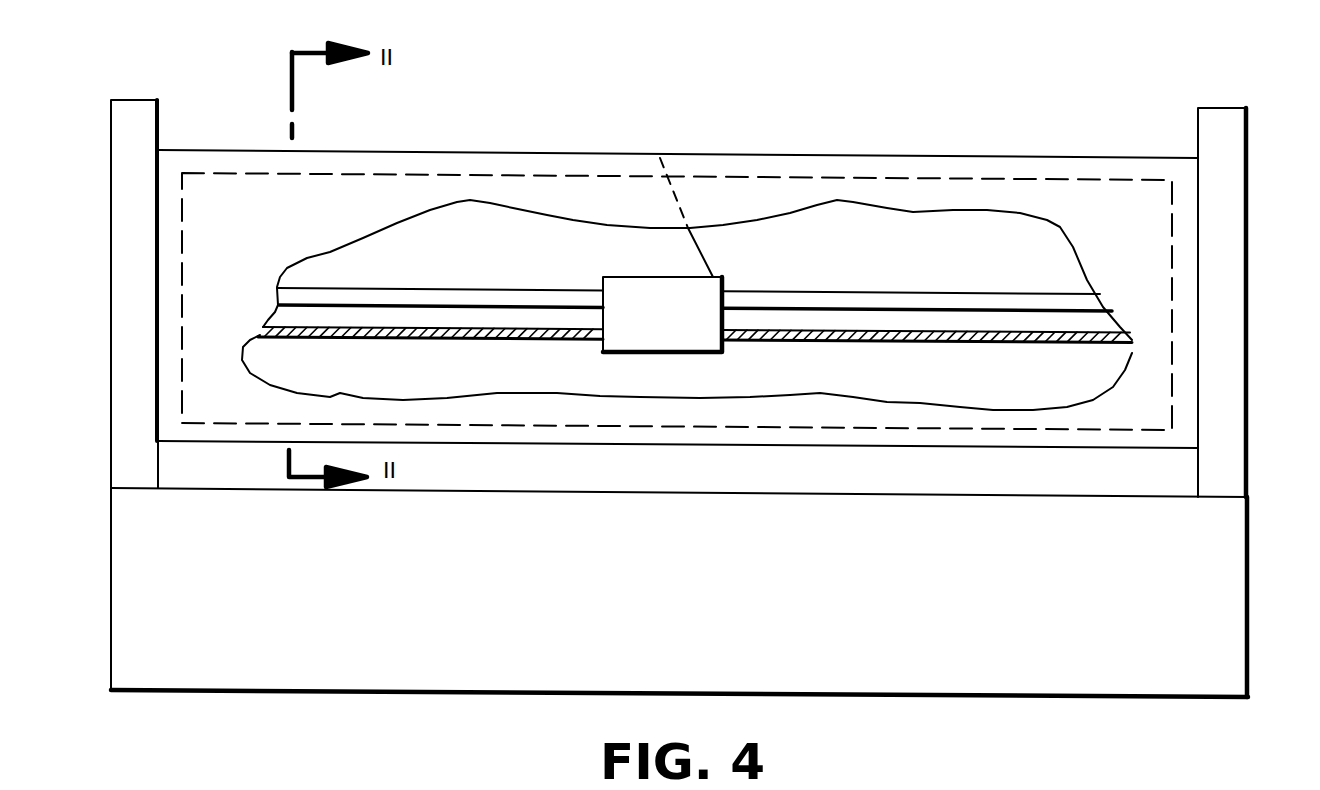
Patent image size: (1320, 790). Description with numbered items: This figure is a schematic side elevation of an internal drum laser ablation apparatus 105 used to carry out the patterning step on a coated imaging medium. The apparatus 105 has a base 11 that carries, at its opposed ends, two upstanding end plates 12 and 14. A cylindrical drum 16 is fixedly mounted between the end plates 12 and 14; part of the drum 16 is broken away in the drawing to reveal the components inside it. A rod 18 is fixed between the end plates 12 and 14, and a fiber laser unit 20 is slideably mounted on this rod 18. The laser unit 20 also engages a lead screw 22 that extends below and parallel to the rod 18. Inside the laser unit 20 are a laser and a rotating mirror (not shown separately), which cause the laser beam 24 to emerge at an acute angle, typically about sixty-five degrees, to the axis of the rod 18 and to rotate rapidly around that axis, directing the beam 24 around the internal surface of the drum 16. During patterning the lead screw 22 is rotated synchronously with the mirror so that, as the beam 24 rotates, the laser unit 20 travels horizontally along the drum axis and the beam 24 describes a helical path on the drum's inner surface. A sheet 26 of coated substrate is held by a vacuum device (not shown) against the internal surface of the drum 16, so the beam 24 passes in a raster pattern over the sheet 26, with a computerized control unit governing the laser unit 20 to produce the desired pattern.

The apparatus 105 is at (556, 107).
The base 11 is at (681, 573).
The end plate 12 is at (122, 222).
The end plate 14 is at (1233, 240).
The cylindrical drum 16 is at (935, 168).
The rod 18 is at (905, 302).
The fiber laser unit 20 is at (673, 328).
The lead screw 22 is at (910, 340).
The laser beam 24 is at (708, 258).
The sheet 26 is at (1173, 413).